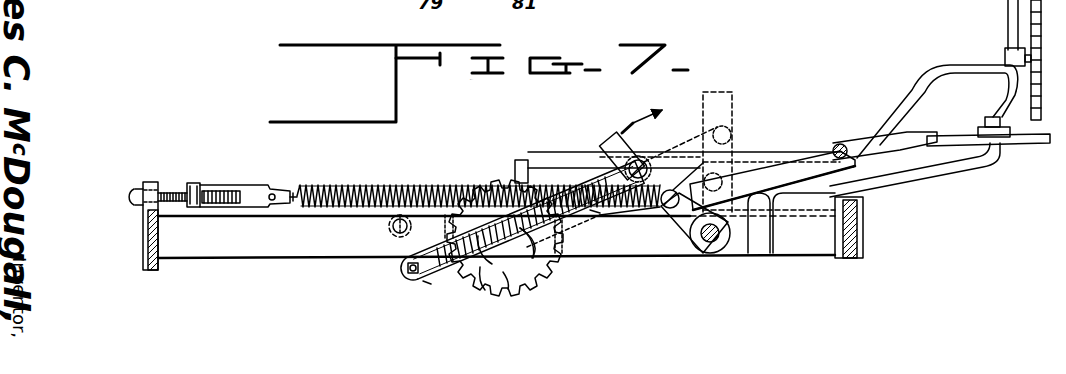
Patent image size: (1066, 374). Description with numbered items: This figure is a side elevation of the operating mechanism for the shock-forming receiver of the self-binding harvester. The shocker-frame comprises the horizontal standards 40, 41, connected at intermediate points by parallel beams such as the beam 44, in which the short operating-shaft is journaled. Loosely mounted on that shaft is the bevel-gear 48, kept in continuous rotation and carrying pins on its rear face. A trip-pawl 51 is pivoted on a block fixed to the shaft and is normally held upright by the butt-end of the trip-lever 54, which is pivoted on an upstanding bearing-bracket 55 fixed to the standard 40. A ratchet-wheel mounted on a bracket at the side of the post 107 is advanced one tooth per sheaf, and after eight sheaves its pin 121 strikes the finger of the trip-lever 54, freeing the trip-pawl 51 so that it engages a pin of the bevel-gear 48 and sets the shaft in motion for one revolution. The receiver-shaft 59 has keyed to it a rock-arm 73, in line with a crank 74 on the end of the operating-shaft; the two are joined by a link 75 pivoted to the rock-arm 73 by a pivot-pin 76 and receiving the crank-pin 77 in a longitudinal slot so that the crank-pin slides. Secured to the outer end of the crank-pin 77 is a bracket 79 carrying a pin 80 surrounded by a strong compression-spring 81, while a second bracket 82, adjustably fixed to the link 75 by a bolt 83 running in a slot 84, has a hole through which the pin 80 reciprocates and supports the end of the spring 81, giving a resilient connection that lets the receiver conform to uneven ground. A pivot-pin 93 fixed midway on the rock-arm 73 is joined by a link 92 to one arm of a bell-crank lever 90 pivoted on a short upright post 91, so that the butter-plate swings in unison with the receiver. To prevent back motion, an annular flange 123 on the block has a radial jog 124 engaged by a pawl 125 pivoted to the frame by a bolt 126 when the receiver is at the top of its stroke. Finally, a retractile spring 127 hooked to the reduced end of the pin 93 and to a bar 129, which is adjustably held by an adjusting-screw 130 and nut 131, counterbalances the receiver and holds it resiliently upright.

The horizontal standard 40 is at (864, 249).
The horizontal standard 41 is at (147, 256).
The parallel beam 44 is at (245, 259).
The bevel-gear 48 is at (540, 272).
The trip-pawl 51 is at (518, 165).
The trip-lever 54 is at (740, 160).
The bearing-bracket 55 is at (846, 144).
The receiver-shaft 59 is at (714, 242).
The rock-arm 73 is at (680, 215).
The crank 74 is at (462, 280).
The link 75 is at (635, 207).
The pivot-pin 76 is at (648, 163).
The crank-pin 77 is at (408, 274).
The bracket 79 is at (425, 282).
The pin 80 is at (510, 282).
The compression-spring 81 is at (556, 256).
The bracket 82 is at (572, 160).
The bolt 83 is at (600, 207).
The slot 84 is at (598, 145).
The bell-crank lever 90 is at (1022, 147).
The upright post 91 is at (985, 172).
The link 92 is at (797, 172).
The pivot-pin 93 is at (662, 208).
The post 107 is at (1008, 17).
The pin 121 is at (1005, 54).
The annular flange 123 is at (485, 292).
The radial jog 124 is at (490, 185).
The pawl 125 is at (402, 215).
The bolt 126 is at (398, 233).
The retractile spring 127 is at (340, 188).
The bar 129 is at (248, 184).
The adjusting-screw 130 is at (170, 191).
The nut 131 is at (200, 208).